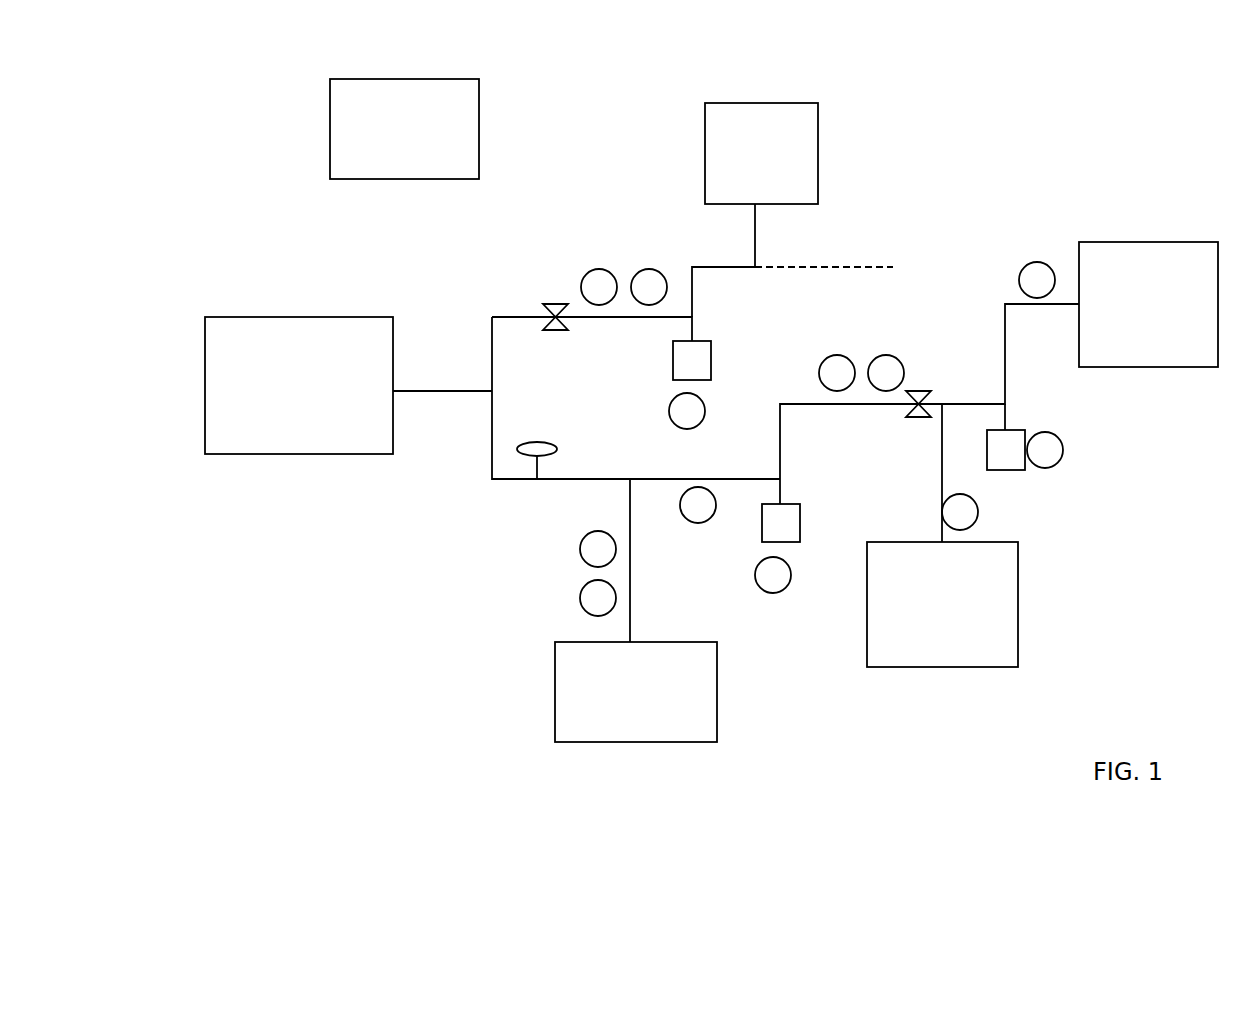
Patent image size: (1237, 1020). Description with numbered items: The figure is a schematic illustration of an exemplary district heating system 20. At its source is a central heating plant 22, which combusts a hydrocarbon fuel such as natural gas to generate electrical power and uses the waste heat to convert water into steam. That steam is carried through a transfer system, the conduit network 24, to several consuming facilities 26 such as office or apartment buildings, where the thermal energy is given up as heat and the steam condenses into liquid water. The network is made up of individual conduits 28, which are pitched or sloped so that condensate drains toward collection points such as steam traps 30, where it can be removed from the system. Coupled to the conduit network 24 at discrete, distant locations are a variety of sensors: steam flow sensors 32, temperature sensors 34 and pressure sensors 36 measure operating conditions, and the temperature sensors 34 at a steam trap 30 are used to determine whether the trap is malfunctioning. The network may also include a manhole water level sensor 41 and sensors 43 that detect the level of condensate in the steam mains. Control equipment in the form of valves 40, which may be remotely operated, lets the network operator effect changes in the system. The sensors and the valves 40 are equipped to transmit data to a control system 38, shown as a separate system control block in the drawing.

The district heating system 20 is at (1205, 170).
The central heating plant 22 is at (295, 317).
The conduit network 24 is at (455, 566).
The consuming facility 26 is at (785, 103).
The conduit 28 is at (528, 318).
The steam trap 30 is at (711, 366).
The steam flow sensor 32 is at (648, 268).
The temperature sensor 34 is at (670, 403).
The pressure sensor 36 is at (612, 268).
The control system 38 is at (422, 79).
The valve 40 is at (553, 332).
The manhole water level sensor 41 is at (525, 443).
The condensate level sensor 43 is at (712, 520).